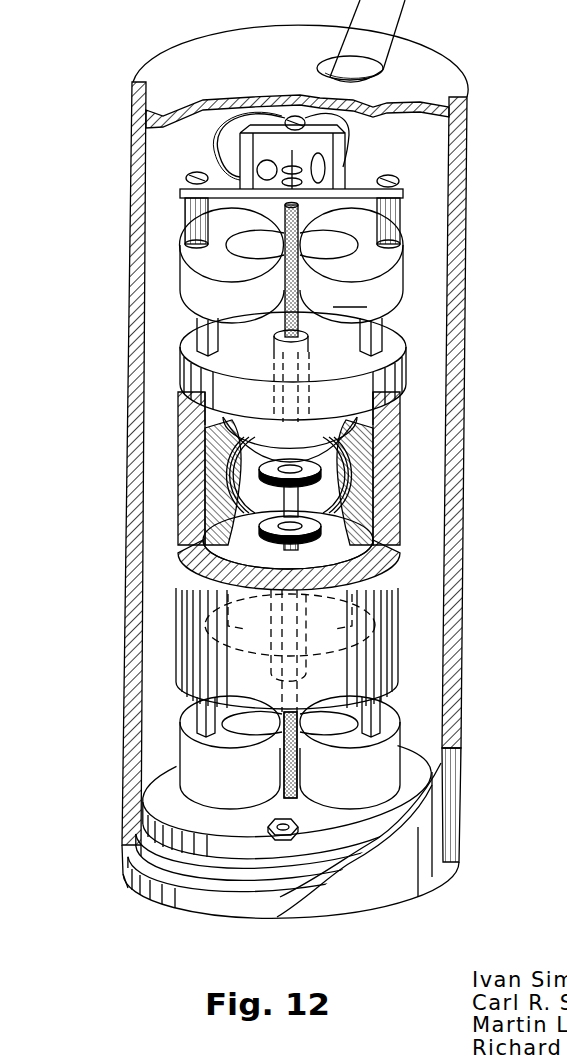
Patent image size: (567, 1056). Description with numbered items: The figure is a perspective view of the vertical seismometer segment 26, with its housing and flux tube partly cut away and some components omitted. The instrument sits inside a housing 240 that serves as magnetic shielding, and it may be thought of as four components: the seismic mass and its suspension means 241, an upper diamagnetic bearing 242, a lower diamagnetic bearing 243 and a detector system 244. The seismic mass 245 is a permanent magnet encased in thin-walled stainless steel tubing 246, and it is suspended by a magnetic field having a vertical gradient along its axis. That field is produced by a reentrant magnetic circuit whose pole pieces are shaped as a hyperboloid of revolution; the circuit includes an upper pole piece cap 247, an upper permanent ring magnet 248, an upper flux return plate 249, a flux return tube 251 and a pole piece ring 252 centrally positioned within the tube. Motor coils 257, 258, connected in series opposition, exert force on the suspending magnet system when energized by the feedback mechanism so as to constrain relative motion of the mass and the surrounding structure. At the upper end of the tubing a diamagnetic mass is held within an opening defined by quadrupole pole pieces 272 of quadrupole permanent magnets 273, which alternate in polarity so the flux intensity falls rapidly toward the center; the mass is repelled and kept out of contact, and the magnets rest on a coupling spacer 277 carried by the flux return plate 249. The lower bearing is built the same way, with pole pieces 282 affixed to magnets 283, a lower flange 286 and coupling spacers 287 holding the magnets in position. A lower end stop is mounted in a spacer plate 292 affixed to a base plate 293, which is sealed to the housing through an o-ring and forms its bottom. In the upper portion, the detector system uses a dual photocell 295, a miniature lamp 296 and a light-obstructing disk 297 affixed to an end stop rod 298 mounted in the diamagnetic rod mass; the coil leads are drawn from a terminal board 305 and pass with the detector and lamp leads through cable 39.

The vertical seismometer segment 26 is at (472, 350).
The cable 39 is at (377, 25).
The housing 240 is at (455, 285).
The seismic mass and suspension means 241 is at (419, 478).
The upper diamagnetic bearing 242 is at (417, 297).
The lower diamagnetic bearing 243 is at (414, 745).
The detector system 244 is at (415, 133).
The seismic mass 245 is at (385, 507).
The thin-walled stainless steel tubing 246 is at (225, 475).
The upper pole piece cap 247 is at (215, 445).
The upper permanent ring magnet 248 is at (245, 420).
The upper flux return plate 249 is at (407, 376).
The flux return tube 251 is at (178, 398).
The pole piece ring 252 is at (395, 440).
The motor coil 257 is at (262, 481).
The motor coil 258 is at (262, 534).
The quadrupole pole pieces 272 is at (400, 258).
The quadrupole permanent magnets 273 is at (350, 296).
The coupling spacer 277 is at (200, 332).
The pole pieces 282 is at (385, 720).
The magnets 283 is at (365, 779).
The lower flange 286 is at (168, 773).
The coupling spacers 287 is at (200, 718).
The spacer plate 292 is at (153, 833).
The base plate 293 is at (130, 873).
The dual photocell 295 is at (345, 170).
The miniature lamp 296 is at (188, 176).
The light-obstructing disk 297 is at (401, 210).
The end stop rod 298 is at (184, 211).
The terminal board 305 is at (404, 191).